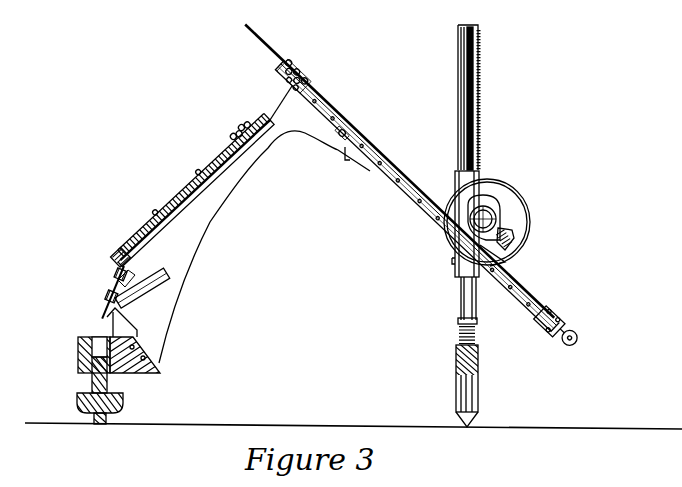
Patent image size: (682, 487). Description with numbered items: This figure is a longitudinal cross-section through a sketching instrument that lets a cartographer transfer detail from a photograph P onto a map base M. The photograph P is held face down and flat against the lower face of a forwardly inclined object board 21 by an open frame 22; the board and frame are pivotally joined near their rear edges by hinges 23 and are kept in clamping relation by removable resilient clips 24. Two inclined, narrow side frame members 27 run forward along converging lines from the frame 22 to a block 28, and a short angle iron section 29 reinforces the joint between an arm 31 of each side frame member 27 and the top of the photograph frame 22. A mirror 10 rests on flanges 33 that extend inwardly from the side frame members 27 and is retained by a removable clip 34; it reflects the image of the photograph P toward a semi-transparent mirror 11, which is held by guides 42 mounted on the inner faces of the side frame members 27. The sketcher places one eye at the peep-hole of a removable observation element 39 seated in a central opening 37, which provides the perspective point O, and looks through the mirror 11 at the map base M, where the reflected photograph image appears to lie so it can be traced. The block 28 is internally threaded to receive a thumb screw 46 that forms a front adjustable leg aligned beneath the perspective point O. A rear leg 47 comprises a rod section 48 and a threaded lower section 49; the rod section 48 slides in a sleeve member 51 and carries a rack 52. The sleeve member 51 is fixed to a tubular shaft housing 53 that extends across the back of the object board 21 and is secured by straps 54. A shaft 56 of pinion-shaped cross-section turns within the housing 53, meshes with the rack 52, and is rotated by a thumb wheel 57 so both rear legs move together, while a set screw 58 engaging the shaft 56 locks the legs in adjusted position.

The photograph P is at (265, 40).
The mirror 10 is at (187, 197).
The semi-transparent mirror 11 is at (138, 296).
The object board 21 is at (398, 157).
The open frame 22 is at (527, 308).
The hinges 23 is at (569, 333).
The resilient clips 24 is at (297, 62).
The side frame members 27 is at (248, 165).
The block 28 is at (78, 355).
The angle iron section 29 is at (338, 124).
The arm 31 is at (344, 156).
The flanges 33 is at (202, 196).
The clip 34 is at (252, 120).
The central opening 37 is at (127, 280).
The observation element 39 is at (115, 247).
The guides 42 is at (168, 290).
The thumb screw 46 is at (77, 401).
The leg 47 is at (449, 306).
The leg section 48 is at (459, 80).
The leg section 49 is at (488, 392).
The sleeve member 51 is at (452, 166).
The rack 52 is at (480, 103).
The tubular shaft housing 53 is at (494, 211).
The straps 54 is at (507, 263).
The shaft 56 is at (497, 211).
The thumb wheel 57 is at (498, 179).
The set screw 58 is at (518, 230).
The perspective point O is at (100, 275).
The map base M is at (190, 418).